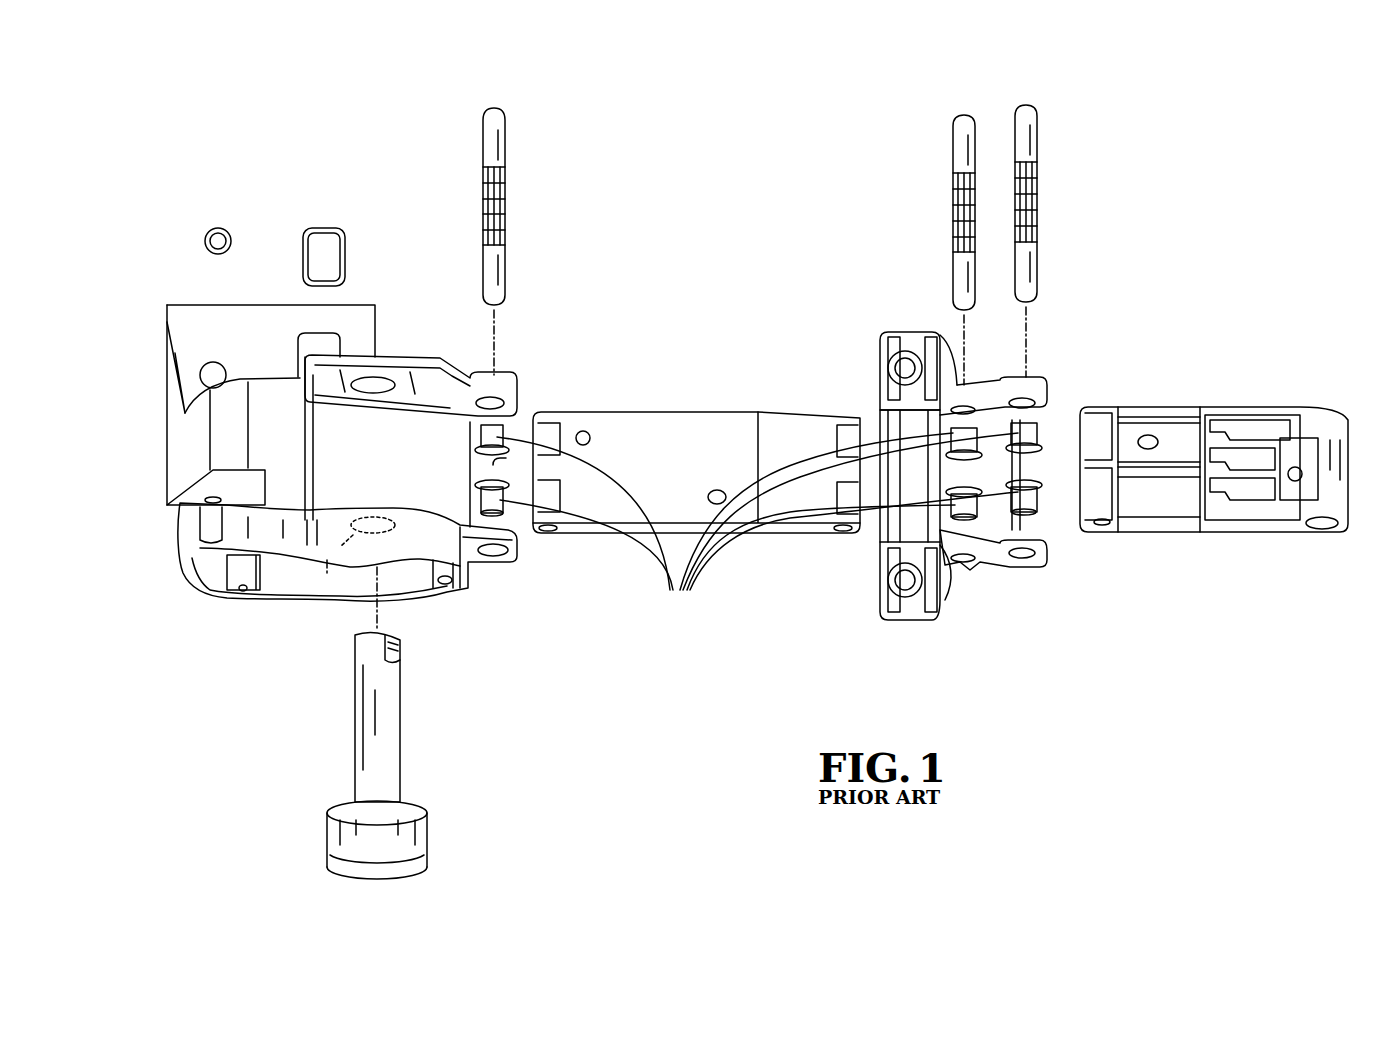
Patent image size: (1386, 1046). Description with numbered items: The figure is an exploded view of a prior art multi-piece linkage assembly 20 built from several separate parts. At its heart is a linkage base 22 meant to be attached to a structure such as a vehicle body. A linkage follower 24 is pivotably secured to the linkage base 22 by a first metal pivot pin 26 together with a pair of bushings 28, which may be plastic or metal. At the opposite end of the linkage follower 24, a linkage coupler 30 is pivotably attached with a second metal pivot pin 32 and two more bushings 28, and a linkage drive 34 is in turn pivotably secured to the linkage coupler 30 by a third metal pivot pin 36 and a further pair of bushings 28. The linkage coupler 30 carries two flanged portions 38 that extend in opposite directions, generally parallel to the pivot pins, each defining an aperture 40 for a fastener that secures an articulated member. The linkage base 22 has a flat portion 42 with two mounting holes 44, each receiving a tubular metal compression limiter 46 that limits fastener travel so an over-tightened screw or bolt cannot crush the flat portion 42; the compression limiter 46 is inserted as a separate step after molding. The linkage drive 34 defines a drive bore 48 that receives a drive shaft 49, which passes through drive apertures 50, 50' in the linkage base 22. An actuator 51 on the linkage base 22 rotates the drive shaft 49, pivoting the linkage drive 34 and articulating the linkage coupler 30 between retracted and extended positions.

The multi-piece linkage assembly 20 is at (322, 108).
The linkage base 22 is at (173, 507).
The linkage follower 24 is at (650, 410).
The first metal pivot pin 26 is at (500, 128).
The bushings 28 is at (757, 522).
The linkage coupler 30 is at (912, 334).
The second metal pivot pin 32 is at (958, 143).
The linkage drive 34 is at (1160, 410).
The third metal pivot pin 36 is at (1030, 140).
The flanged portions 38 is at (882, 352).
The aperture 40 is at (900, 369).
The flat portion 42 is at (275, 322).
The mounting holes 44 is at (210, 370).
The compression limiter 46 is at (345, 212).
The drive bore 48 is at (1322, 528).
The drive shaft 49 is at (365, 748).
The drive aperture 50 is at (347, 565).
The drive aperture 50' is at (411, 413).
The actuator 51 is at (335, 835).